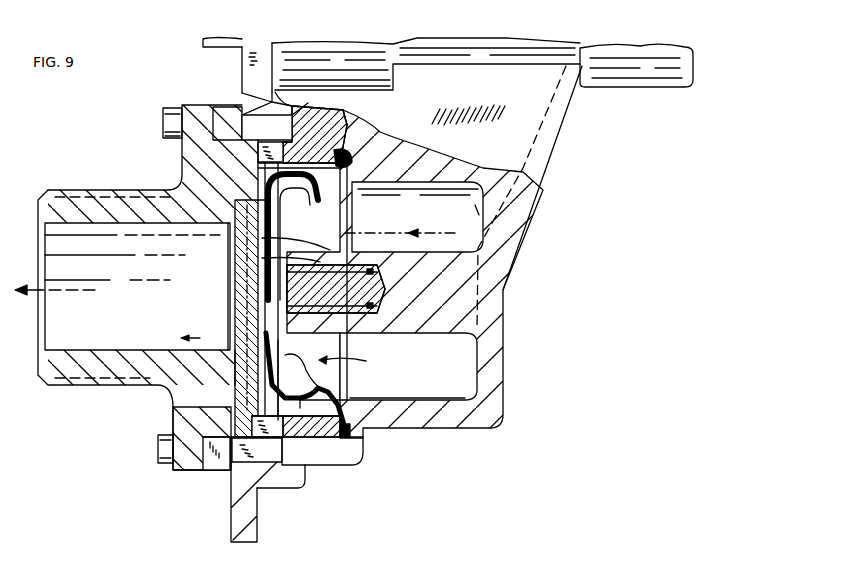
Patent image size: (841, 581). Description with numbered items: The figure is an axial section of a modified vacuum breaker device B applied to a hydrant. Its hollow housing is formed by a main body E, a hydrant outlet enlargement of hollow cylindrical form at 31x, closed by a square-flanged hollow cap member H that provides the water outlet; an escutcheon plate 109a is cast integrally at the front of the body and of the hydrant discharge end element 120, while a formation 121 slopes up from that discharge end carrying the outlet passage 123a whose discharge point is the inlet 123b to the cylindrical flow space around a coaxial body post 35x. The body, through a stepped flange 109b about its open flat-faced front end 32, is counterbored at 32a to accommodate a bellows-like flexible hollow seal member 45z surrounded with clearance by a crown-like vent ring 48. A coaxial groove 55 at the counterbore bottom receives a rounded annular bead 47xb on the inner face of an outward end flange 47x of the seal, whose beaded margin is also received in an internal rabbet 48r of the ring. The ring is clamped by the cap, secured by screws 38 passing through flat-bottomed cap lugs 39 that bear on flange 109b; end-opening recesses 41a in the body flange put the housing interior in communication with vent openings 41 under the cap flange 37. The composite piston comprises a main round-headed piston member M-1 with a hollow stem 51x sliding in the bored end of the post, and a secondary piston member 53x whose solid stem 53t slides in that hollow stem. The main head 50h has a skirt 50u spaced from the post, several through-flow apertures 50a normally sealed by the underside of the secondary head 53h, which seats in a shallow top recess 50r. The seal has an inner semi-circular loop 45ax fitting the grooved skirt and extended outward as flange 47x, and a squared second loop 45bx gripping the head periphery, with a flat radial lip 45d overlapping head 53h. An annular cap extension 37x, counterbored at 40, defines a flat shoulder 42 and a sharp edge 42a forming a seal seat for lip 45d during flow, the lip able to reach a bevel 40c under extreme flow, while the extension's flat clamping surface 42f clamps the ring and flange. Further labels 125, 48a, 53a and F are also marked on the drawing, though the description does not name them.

The bracket tab 125 is at (203, 42).
The escutcheon plate 109a is at (242, 66).
The stepped flange 109b is at (267, 489).
The hydrant discharge end element 120 is at (590, 83).
The formation 121 is at (563, 128).
The outlet passage 123a is at (556, 166).
The inlet 123b is at (417, 217).
The body post 35x is at (426, 337).
The hollow cylindrical form 31x is at (458, 400).
The body E is at (504, 339).
The cap member H is at (66, 192).
The counterbore 40 is at (238, 287).
The bevel 40c is at (260, 298).
The secondary member head 53h is at (262, 246).
The secondary headed piston member 53x is at (262, 258).
The lip portion 45d is at (268, 330).
The shoulder 42 is at (258, 387).
The sharp circular edge 42a is at (235, 372).
The annular flat end clamping surface 42f is at (252, 421).
The screws 38 is at (163, 120).
The cap flange 37 is at (173, 420).
The annular cap extension 37x is at (218, 468).
The cap lugs 39 is at (214, 470).
The front end 32 is at (231, 497).
The vent openings 41 is at (260, 116).
The end-opening recesses 41a is at (267, 127).
The vent ring 48 is at (300, 128).
The ring insert 48a is at (258, 151).
The internal rabbet 48r is at (362, 452).
The counterbore 32a is at (349, 146).
The main head 50h is at (262, 190).
The top recess 50r is at (238, 201).
The through-flow apertures 50a is at (344, 240).
The skirt 50u is at (337, 379).
The hollow cylindrical stem 51x is at (343, 244).
The solid stem 53t is at (370, 275).
The pin 53a is at (380, 300).
The coaxial groove 55 is at (356, 402).
The seal member 45z is at (296, 410).
The second loop 45bx is at (279, 420).
The inner semi-circular loop 45ax is at (308, 440).
The end flange 47x is at (316, 440).
The annular bead 47xb is at (350, 432).
The main shiftable piston member M-1 is at (356, 362).
The vacuum breaker device B is at (88, 132).
The flange region F is at (114, 387).